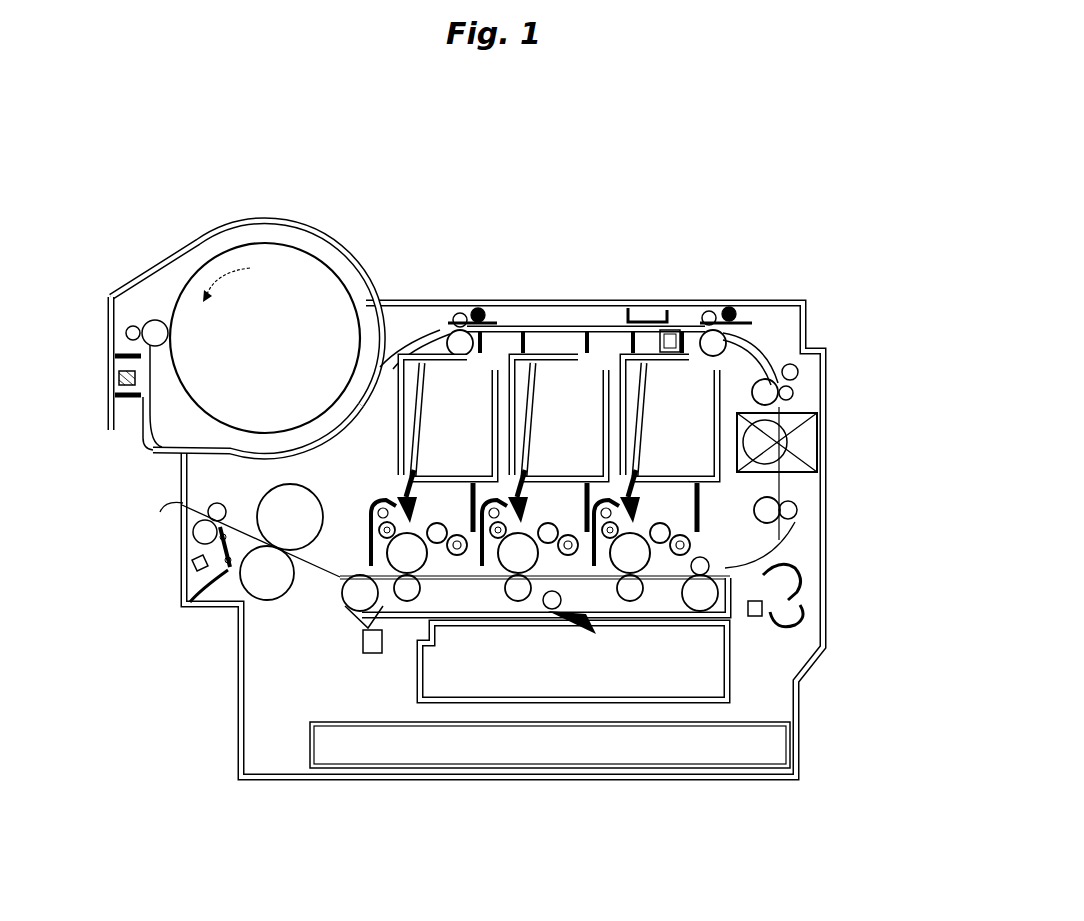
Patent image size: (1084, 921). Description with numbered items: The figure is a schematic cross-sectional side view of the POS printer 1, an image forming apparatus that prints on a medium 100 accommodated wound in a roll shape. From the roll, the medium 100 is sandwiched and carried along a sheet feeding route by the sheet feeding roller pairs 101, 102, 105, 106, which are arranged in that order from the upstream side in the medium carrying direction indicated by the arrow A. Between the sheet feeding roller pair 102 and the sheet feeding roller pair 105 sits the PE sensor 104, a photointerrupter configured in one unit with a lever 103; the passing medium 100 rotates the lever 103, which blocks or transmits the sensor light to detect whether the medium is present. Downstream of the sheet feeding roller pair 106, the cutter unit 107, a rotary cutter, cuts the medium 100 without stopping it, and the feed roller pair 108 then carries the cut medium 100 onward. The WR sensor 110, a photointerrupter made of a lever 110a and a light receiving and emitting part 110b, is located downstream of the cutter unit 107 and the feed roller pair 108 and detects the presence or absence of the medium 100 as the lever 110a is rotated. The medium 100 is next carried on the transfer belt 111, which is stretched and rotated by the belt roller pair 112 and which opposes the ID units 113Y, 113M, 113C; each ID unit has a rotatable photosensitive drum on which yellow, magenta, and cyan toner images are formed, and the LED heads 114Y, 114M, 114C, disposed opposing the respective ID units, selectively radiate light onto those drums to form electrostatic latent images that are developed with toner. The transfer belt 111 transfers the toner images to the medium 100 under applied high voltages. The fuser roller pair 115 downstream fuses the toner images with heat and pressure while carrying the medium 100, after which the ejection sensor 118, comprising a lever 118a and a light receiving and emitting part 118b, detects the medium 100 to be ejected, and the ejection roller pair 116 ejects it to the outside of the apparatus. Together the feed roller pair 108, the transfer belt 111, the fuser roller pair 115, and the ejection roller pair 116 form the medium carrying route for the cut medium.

The POS printer 1 is at (860, 286).
The medium 100 is at (205, 247).
The sheet feeding roller pair 101 is at (140, 325).
The sheet feeding roller pair 102 is at (585, 319).
The lever 103 is at (618, 303).
The PE sensor 104 is at (662, 302).
The sheet feeding roller pair 105 is at (752, 330).
The sheet feeding roller pair 106 is at (782, 357).
The cutter unit 107 is at (805, 412).
The feed roller pair 108 is at (768, 496).
The WR sensor 110 is at (855, 596).
The lever 110a is at (790, 580).
The light receiving and emitting part 110b is at (787, 625).
The transfer belt 111 is at (405, 607).
The belt roller pair 112 is at (732, 648).
The ID unit 113C is at (442, 585).
The ID unit 113M is at (535, 585).
The ID unit 113Y is at (663, 585).
The LED head 114C is at (425, 442).
The LED head 114M is at (510, 445).
The LED head 114Y is at (647, 423).
The fuser roller pair 115 is at (258, 605).
The ejection roller pair 116 is at (200, 523).
The ejection sensor 118 is at (138, 575).
The lever 118a is at (190, 603).
The light receiving and emitting part 118b is at (190, 558).